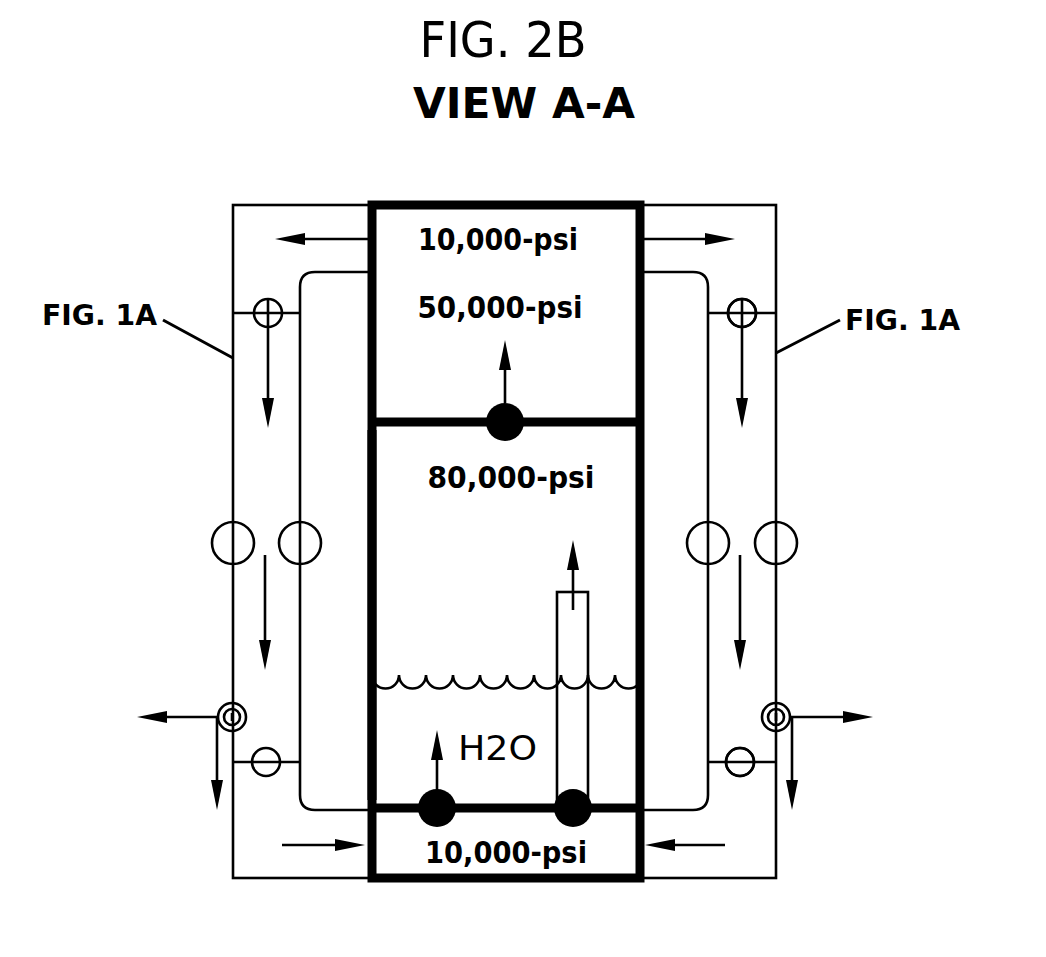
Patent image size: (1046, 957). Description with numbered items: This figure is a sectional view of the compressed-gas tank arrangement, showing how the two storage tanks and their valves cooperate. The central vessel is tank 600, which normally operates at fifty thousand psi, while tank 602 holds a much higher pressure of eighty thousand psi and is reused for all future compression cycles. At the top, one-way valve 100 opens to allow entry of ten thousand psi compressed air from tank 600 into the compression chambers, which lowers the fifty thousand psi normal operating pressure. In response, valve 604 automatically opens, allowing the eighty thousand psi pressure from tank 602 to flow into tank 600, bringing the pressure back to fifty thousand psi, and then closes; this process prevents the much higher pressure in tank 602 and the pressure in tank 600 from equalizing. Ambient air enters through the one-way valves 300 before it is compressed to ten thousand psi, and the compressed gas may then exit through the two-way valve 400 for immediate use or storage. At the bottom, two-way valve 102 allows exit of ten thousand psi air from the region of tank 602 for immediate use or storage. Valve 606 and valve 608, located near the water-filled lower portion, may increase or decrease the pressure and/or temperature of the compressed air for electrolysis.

The tank 600 is at (393, 203).
The tank 602 is at (372, 486).
The valve 604 is at (487, 435).
The valve 606 is at (425, 800).
The valve 608 is at (586, 800).
The one-way valve 100 is at (753, 300).
The one-way valves 300 is at (792, 530).
The two-way valve 400 is at (222, 710).
The two-way valve 102 is at (738, 782).